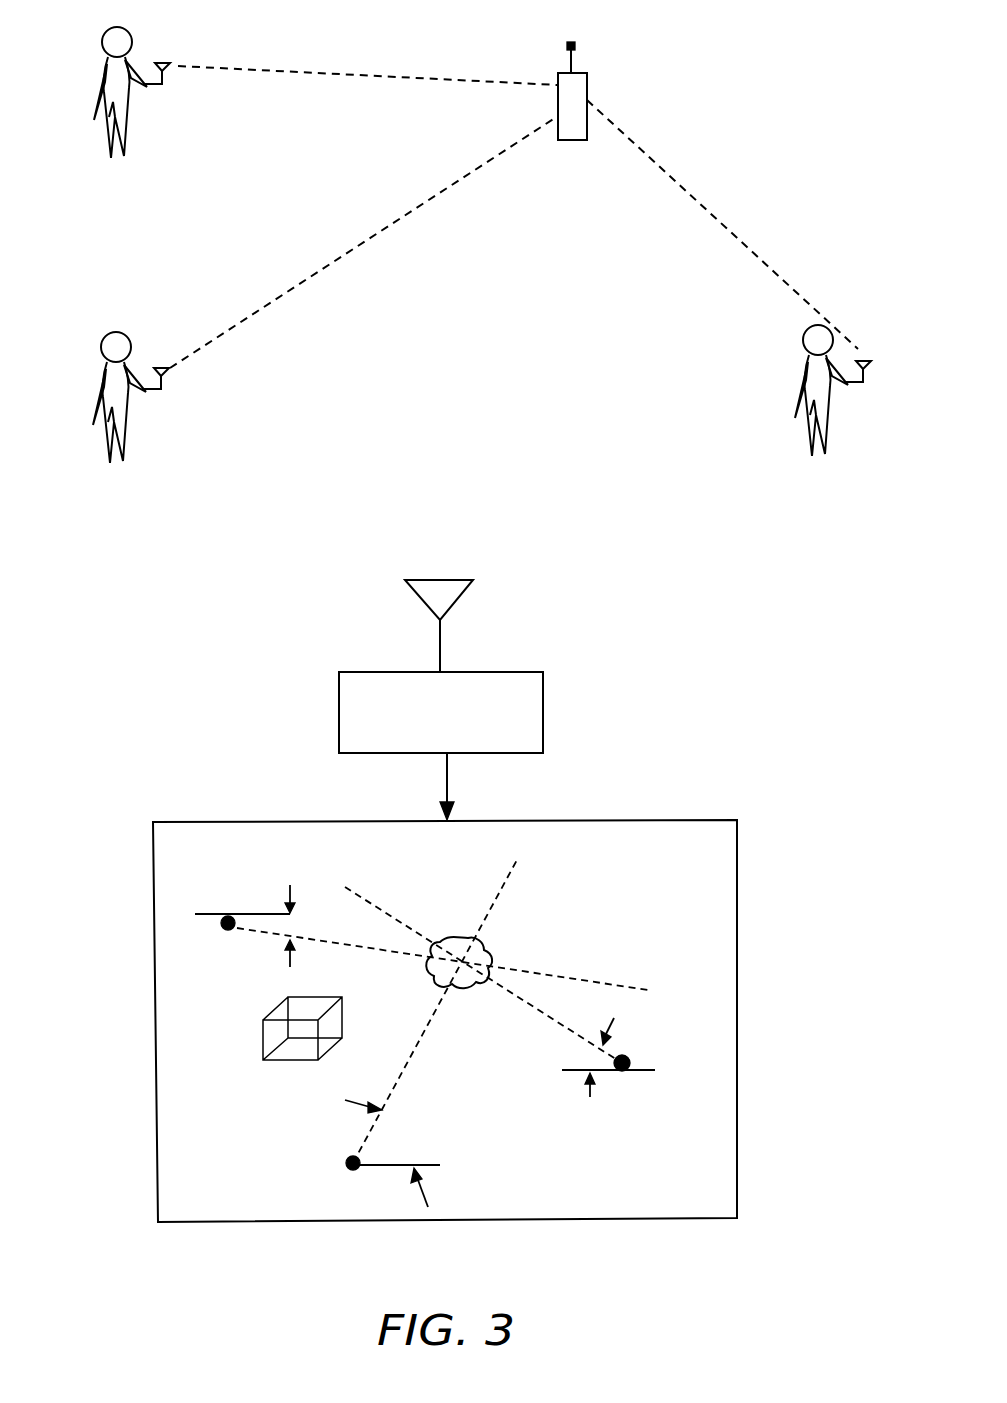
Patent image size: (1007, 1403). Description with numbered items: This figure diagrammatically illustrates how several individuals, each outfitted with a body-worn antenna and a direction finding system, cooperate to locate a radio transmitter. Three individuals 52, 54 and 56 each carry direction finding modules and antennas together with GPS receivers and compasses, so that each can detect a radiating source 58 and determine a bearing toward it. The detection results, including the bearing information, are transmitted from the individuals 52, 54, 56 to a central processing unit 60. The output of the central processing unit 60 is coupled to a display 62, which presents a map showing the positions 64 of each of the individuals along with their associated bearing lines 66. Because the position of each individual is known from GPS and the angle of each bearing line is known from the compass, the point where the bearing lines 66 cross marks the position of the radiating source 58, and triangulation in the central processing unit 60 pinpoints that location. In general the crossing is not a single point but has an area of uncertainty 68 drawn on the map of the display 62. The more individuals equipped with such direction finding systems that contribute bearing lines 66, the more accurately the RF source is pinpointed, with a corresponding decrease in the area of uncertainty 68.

The individual 52 is at (130, 62).
The individual 54 is at (135, 356).
The individual 56 is at (836, 348).
The radiating source 58 is at (587, 80).
The central processing unit 60 is at (543, 686).
The display 62 is at (690, 820).
The positions 64 is at (232, 917).
The bearing lines 66 is at (360, 72).
The area of uncertainty 68 is at (490, 956).